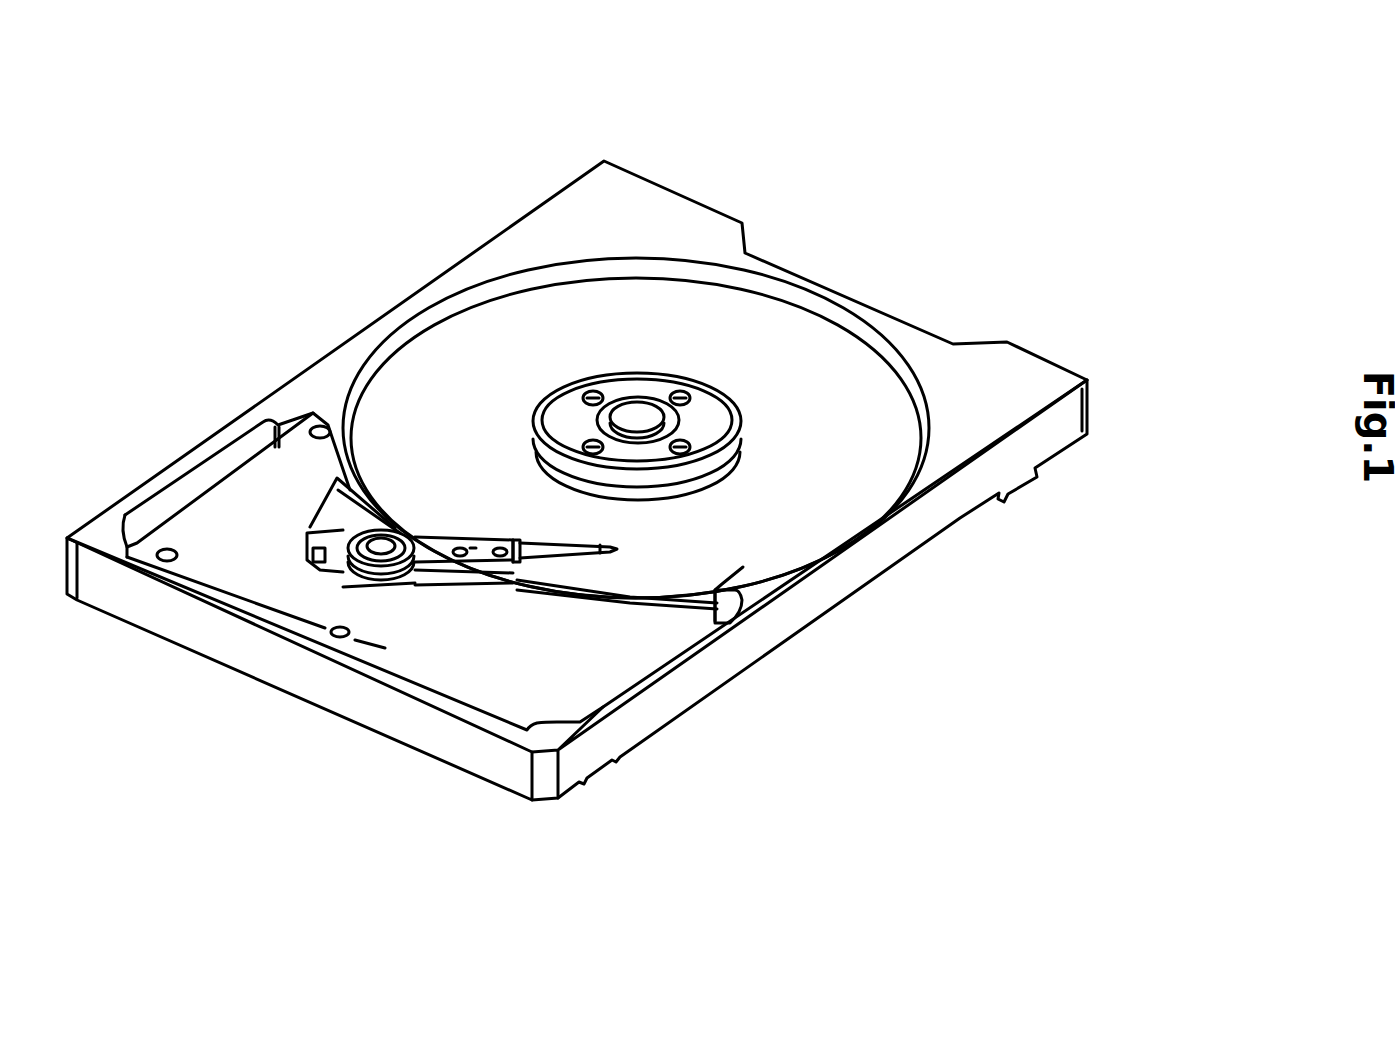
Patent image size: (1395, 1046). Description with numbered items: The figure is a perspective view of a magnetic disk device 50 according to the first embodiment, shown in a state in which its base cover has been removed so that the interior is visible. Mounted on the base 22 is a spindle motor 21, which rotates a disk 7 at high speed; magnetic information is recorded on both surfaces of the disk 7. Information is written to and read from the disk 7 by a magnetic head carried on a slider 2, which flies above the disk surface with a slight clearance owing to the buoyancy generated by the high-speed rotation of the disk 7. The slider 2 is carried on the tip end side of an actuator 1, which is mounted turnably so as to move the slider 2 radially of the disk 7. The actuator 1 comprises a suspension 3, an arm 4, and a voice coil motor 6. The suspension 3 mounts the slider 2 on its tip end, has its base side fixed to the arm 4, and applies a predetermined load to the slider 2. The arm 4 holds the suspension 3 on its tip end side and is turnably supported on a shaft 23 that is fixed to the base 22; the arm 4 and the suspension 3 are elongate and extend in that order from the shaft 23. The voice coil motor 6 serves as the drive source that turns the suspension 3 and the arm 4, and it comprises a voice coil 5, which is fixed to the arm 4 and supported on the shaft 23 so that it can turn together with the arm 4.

The magnetic disk device 50 is at (443, 227).
The base 22 is at (990, 380).
The disk 7 is at (847, 380).
The spindle motor 21 is at (663, 397).
The voice coil motor 6 is at (250, 522).
The shaft 23 is at (388, 528).
The voice coil 5 is at (337, 543).
The actuator 1 is at (350, 583).
The suspension 3 is at (482, 563).
The arm 4 is at (473, 552).
The slider 2 is at (718, 624).